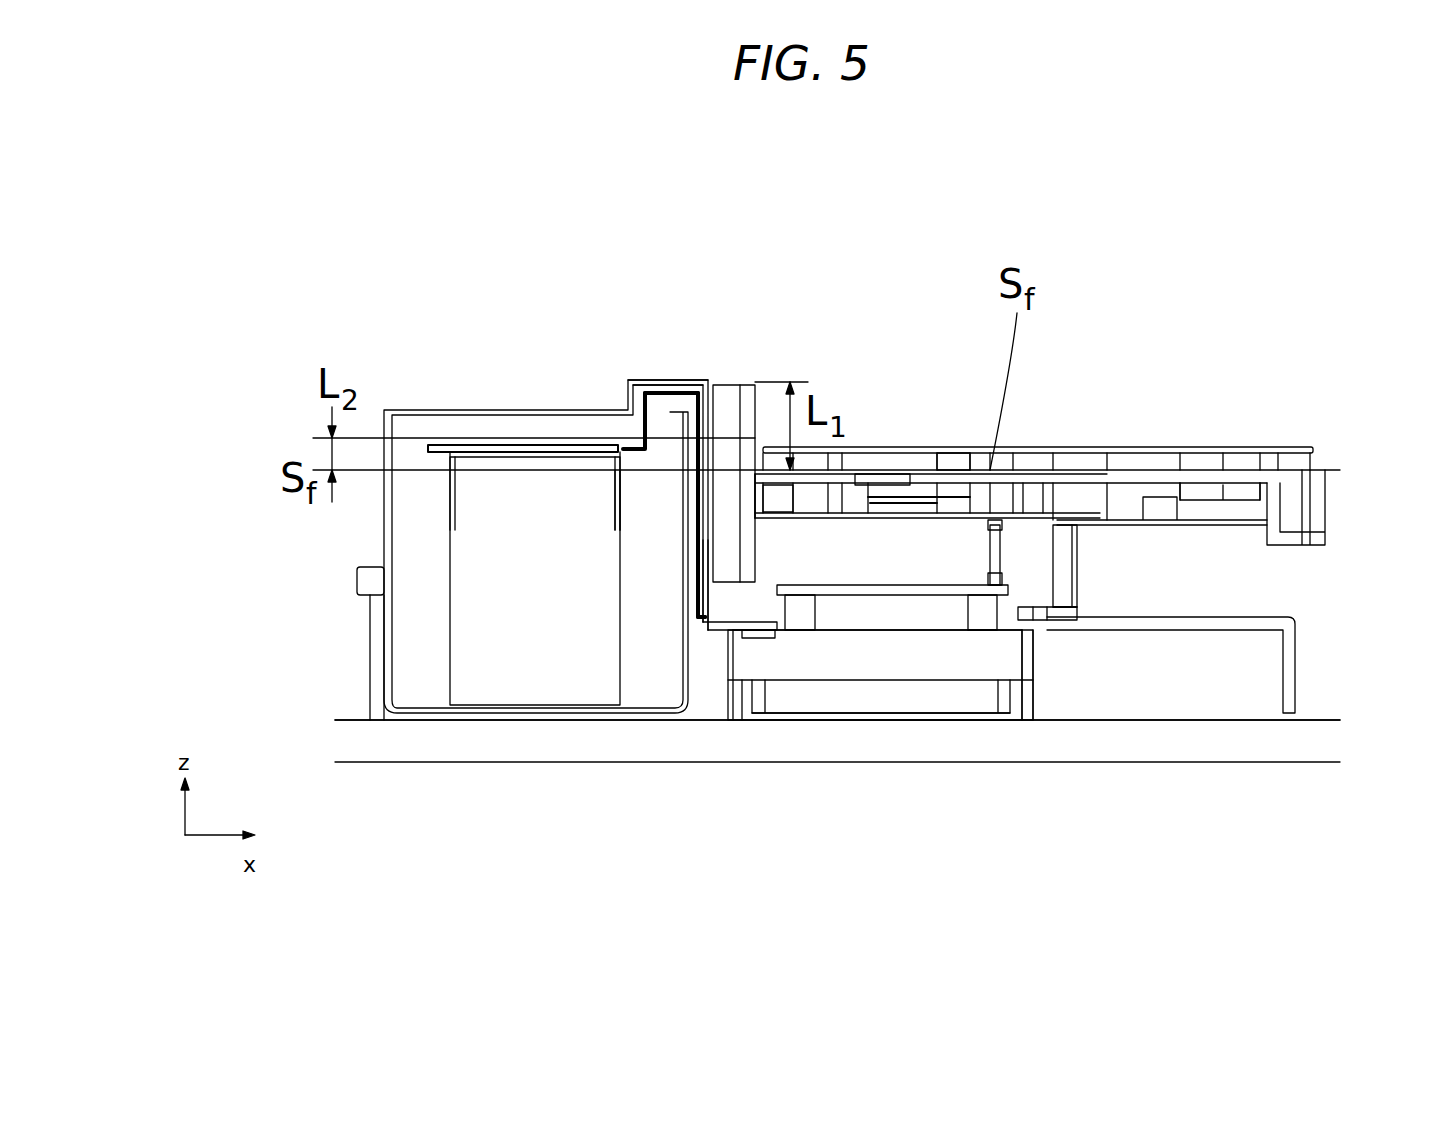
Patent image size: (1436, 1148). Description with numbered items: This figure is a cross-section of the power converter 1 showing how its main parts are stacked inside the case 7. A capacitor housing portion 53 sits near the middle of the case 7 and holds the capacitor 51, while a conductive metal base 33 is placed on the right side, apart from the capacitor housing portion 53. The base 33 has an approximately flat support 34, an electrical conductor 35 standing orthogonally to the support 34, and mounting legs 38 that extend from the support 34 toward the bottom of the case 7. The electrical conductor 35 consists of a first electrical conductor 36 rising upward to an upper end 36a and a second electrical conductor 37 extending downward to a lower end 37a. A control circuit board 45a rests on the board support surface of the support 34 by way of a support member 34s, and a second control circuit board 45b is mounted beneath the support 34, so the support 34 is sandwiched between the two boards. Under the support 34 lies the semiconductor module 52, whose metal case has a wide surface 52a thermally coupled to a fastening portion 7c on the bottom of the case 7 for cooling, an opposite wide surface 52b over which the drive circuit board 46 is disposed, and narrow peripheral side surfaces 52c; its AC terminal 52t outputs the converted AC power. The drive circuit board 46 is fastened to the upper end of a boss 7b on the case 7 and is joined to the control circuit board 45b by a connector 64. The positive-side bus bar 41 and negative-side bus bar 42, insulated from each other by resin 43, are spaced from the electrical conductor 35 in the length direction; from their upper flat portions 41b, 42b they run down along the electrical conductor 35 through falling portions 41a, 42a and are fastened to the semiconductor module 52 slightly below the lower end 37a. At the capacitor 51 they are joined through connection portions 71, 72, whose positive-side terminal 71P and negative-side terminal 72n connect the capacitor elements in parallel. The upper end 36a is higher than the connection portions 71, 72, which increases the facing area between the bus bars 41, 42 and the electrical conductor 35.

The sensor device 1 is at (731, 131).
The case 7 is at (1233, 750).
The boss 7b is at (980, 618).
The fastening portion 7c is at (808, 697).
The base 33 is at (1312, 510).
The support 34 is at (1015, 447).
The support member 34s is at (1050, 447).
The electrical conductor 35 is at (962, 270).
The first electrical conductor 36 is at (768, 395).
The upper end 36a is at (757, 410).
The second electrical conductor 37 is at (833, 470).
The lower end 37a is at (755, 540).
The mounting leg 38 is at (1065, 583).
The positive-side bus bar 41 is at (690, 378).
The falling portion 41a is at (718, 637).
The upper flat portion 41b is at (685, 380).
The negative-side bus bar 42 is at (655, 380).
The falling portion 42a is at (693, 525).
The upper flat portion 42b is at (663, 380).
The resin 43 is at (700, 560).
The control circuit board 45a is at (1217, 447).
The control circuit board 45b is at (933, 450).
The drive circuit board 46 is at (920, 592).
The capacitor 51 is at (508, 645).
The semiconductor module 52 is at (890, 650).
The wide surface 52a is at (828, 682).
The wide surface 52b is at (867, 630).
The peripheral side surface 52c is at (1035, 653).
The AC terminal 52t is at (1288, 680).
The capacitor housing portion 53 is at (384, 655).
The connector 64 is at (997, 575).
The connection portion 71 is at (573, 440).
The positive-side terminal 71P is at (617, 495).
The connection portion 72 is at (497, 440).
The negative-side terminal 72n is at (450, 498).